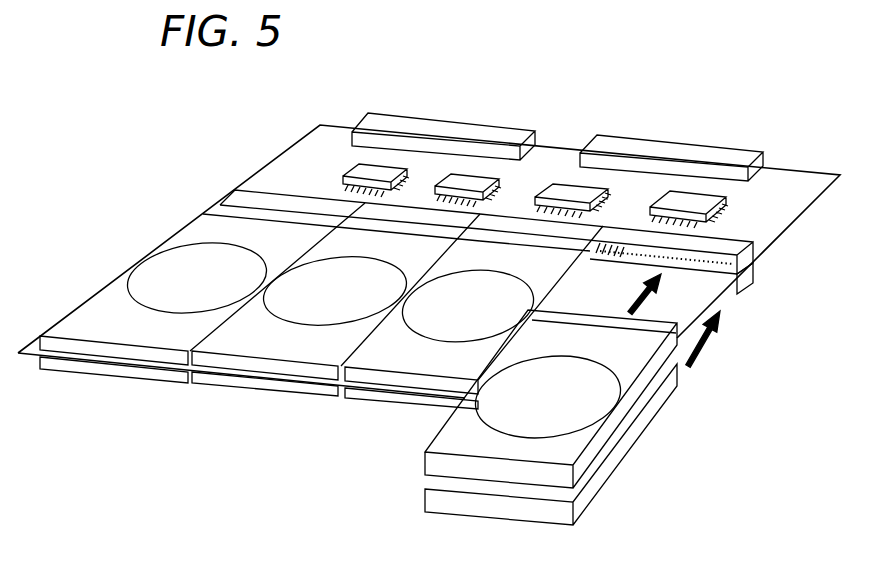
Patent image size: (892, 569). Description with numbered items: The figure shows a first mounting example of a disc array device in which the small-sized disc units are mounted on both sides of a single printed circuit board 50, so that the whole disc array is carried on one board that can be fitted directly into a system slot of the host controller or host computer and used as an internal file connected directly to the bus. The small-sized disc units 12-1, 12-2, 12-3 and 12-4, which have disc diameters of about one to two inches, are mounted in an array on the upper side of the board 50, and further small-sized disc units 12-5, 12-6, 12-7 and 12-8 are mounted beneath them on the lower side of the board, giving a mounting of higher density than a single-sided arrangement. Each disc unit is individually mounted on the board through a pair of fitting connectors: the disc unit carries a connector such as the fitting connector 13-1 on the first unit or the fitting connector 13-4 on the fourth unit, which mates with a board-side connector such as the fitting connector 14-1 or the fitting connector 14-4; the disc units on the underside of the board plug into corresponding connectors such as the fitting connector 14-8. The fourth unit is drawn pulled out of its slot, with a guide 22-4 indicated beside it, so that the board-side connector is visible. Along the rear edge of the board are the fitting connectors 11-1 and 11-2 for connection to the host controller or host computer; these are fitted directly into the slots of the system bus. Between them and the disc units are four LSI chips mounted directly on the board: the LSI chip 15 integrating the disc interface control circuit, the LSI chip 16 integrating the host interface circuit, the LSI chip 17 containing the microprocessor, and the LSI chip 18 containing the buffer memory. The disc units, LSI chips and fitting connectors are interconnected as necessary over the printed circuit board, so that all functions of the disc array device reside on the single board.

The circuit board 50 is at (786, 231).
The fitting connector 11-1 is at (437, 128).
The fitting connector 11-2 is at (664, 150).
The LSI chip 15 is at (356, 168).
The LSI chip 16 is at (448, 178).
The LSI chip 17 is at (557, 190).
The LSI chip 18 is at (663, 200).
The small-sized disc unit 12-1 is at (82, 340).
The small-sized disc unit 12-2 is at (240, 345).
The small-sized disc unit 12-3 is at (380, 362).
The small-sized disc unit 12-4 is at (442, 465).
The disk drive 12-5 is at (108, 370).
The disk drive 12-6 is at (262, 385).
The disk drive 12-7 is at (378, 400).
The disk drive 12-8 is at (453, 512).
The fitting connector 13-1 is at (218, 199).
The drive-side connector 13-4 is at (590, 322).
The fitting connector 14-1 is at (303, 200).
The board-side connector 14-4 is at (748, 236).
The board-side connector 14-8 is at (745, 285).
The guide rail 22-4 is at (643, 563).